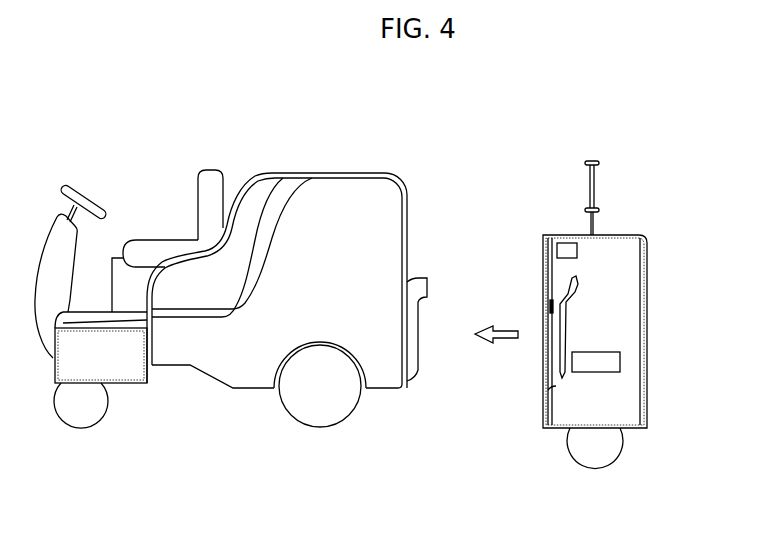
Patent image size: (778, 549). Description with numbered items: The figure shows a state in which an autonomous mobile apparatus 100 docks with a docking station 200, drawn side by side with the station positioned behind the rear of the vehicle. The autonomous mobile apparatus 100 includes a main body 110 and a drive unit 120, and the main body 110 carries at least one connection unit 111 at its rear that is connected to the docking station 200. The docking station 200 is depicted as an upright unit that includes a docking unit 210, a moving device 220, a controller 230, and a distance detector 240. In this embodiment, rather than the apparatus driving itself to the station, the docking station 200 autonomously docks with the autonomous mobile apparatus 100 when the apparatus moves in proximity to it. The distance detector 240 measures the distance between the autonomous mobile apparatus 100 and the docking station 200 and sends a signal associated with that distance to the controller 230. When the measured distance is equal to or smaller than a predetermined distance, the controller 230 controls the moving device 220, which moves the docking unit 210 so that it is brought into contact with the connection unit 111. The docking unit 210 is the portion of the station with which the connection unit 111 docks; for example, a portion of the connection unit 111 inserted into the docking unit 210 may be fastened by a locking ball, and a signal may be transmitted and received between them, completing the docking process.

The autonomous mobile apparatus 100 is at (136, 164).
The main body 110 is at (207, 355).
The connection unit 111 is at (412, 318).
The drive unit 120 is at (317, 412).
The docking station 200 is at (623, 210).
The docking unit 210 is at (548, 358).
The moving device 220 is at (592, 458).
The controller 230 is at (620, 362).
The distance detector 240 is at (567, 244).